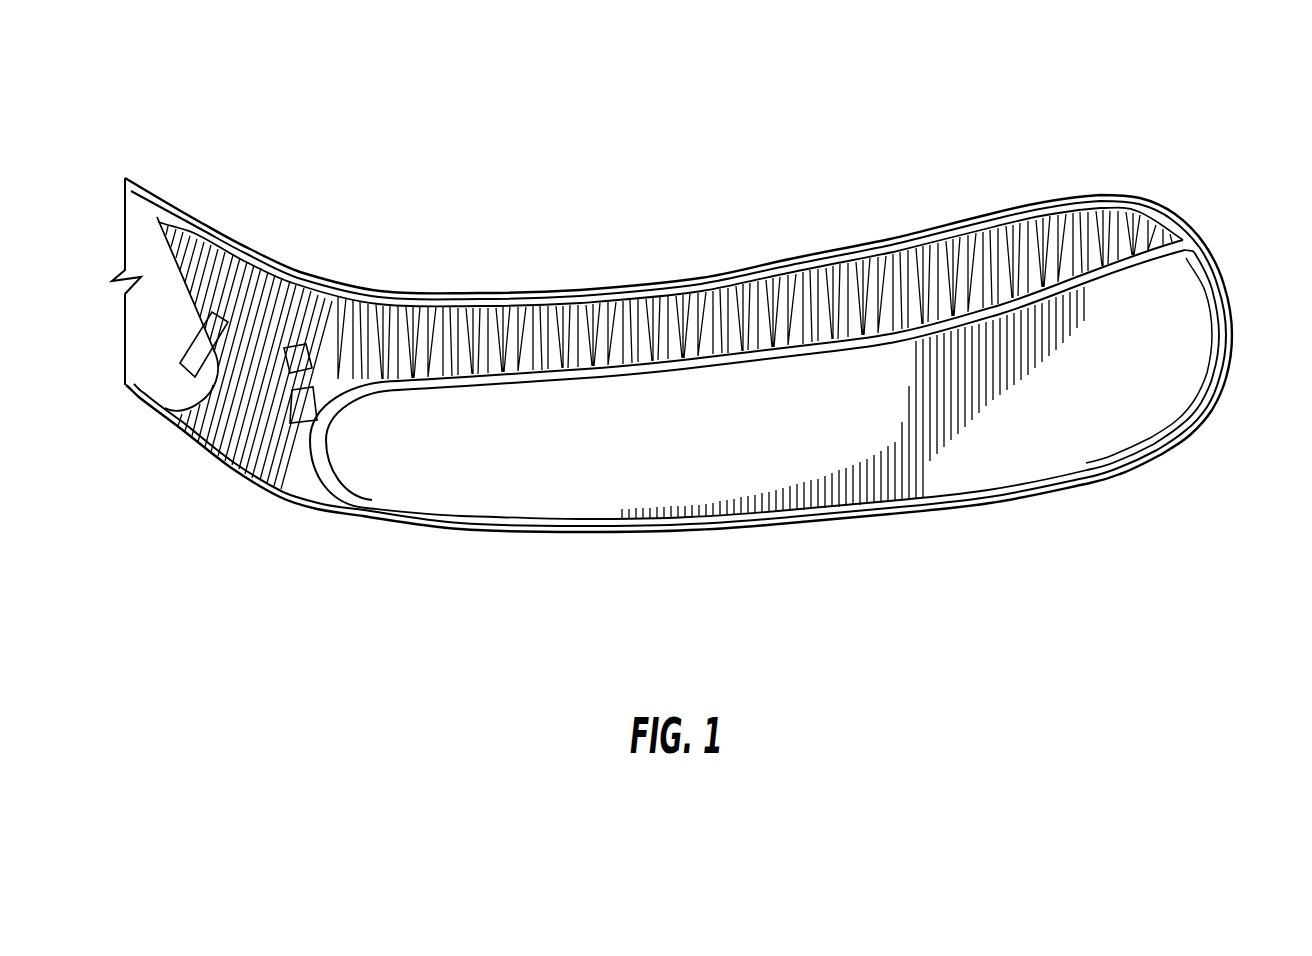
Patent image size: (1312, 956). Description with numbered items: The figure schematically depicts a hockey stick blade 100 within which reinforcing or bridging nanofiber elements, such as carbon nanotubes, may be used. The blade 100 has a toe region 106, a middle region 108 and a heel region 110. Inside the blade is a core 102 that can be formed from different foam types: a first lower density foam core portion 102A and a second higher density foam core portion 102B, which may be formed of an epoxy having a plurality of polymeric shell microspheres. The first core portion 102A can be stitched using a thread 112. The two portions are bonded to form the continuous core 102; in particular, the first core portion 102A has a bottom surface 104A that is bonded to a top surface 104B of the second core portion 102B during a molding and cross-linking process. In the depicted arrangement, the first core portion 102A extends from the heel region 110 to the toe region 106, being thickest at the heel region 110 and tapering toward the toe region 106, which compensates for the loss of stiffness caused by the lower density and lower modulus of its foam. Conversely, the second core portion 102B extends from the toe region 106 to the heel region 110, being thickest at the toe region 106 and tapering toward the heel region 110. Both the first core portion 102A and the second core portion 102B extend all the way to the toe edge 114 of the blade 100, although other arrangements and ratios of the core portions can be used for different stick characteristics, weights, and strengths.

The hockey stick blade 100 is at (523, 250).
The core 102 is at (911, 320).
The first lower density foam core portion 102A is at (674, 312).
The second higher density foam core portion 102B is at (606, 483).
The bottom surface 104A is at (456, 378).
The top surface 104B is at (693, 366).
The toe region 106 is at (1183, 297).
The middle region 108 is at (823, 430).
The heel region 110 is at (333, 445).
The thread 112 is at (293, 305).
The toe edge 114 is at (1193, 238).